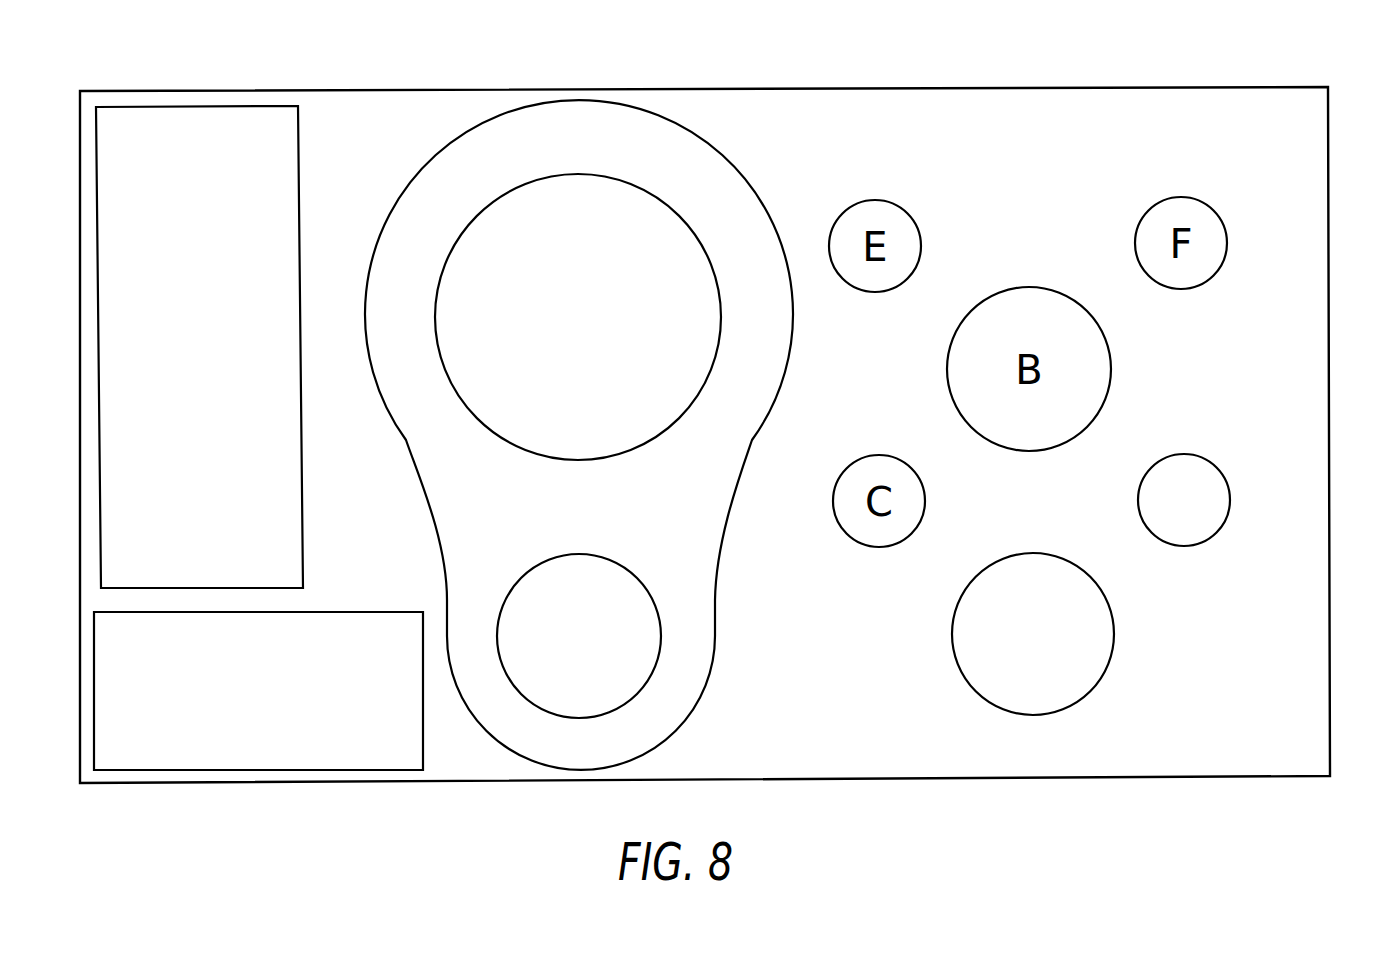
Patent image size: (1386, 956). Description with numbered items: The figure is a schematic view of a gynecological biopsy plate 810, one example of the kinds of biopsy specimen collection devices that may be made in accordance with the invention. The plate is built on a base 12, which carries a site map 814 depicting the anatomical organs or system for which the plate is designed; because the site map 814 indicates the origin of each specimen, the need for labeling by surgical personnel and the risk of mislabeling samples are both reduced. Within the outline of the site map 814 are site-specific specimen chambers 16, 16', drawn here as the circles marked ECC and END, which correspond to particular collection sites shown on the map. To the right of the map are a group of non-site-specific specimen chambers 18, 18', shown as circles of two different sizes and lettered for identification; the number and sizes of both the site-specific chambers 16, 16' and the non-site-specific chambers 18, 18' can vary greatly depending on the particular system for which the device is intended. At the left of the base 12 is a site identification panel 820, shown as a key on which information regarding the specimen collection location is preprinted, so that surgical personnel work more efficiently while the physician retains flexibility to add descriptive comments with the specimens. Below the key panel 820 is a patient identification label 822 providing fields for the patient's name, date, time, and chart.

The gynecological biopsy plate 810 is at (1346, 194).
The base 12 is at (1309, 343).
The site map 814 is at (776, 358).
The site-specific specimen chamber 16 is at (581, 618).
The site-specific specimen chamber 16' is at (587, 317).
The non-site-specific specimen chamber 18 is at (1202, 488).
The non-site-specific specimen chamber 18' is at (1067, 634).
The site identification panel 820 is at (281, 452).
The patient ID label box 822 is at (352, 618).